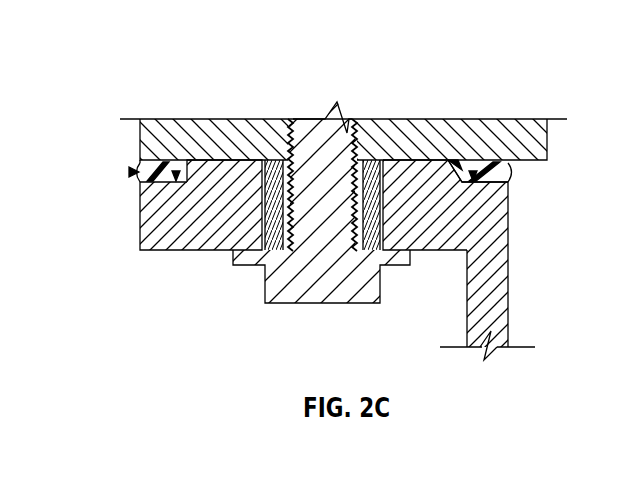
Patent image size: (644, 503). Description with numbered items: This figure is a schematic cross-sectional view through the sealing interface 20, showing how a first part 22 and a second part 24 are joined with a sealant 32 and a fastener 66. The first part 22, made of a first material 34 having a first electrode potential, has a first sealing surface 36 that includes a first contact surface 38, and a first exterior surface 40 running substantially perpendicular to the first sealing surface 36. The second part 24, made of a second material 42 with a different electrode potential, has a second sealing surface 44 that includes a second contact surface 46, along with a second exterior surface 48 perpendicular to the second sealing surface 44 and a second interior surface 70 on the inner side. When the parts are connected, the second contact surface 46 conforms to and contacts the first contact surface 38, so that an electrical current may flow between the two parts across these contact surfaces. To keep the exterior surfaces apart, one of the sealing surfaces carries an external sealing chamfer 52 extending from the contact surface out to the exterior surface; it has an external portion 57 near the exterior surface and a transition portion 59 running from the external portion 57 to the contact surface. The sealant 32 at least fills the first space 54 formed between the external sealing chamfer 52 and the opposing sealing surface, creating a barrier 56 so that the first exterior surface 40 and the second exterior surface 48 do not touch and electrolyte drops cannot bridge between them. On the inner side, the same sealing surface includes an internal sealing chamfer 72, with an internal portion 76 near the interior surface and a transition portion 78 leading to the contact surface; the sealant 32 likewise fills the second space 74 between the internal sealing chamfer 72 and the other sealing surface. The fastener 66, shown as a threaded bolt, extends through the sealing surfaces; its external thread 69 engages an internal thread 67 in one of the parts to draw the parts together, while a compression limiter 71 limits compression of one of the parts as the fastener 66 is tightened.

The sealing interface 20 is at (165, 40).
The first part 22 is at (527, 119).
The second part 24 is at (508, 330).
The sealant 32 is at (138, 161).
The first material 34 is at (537, 137).
The first sealing surface 36 is at (428, 228).
The first contact surface 38 is at (222, 172).
The first exterior surface 40 is at (139, 130).
The second material 42 is at (488, 305).
The second sealing surface 44 is at (397, 158).
The second contact surface 46 is at (232, 160).
The second exterior surface 48 is at (140, 230).
The external sealing chamfer 52 is at (176, 172).
The first space 54 is at (152, 179).
The barrier 56 is at (130, 172).
The external portion 57 is at (163, 160).
The transition portion 59 is at (200, 160).
The fastener 66 is at (312, 296).
The internal thread 67 is at (295, 154).
The external thread 69 is at (283, 135).
The second interior surface 70 is at (508, 270).
The compression limiter 71 is at (262, 220).
The internal sealing chamfer 72 is at (460, 165).
The second space 74 is at (508, 195).
The internal portion 76 is at (500, 158).
The transition portion 78 is at (473, 172).